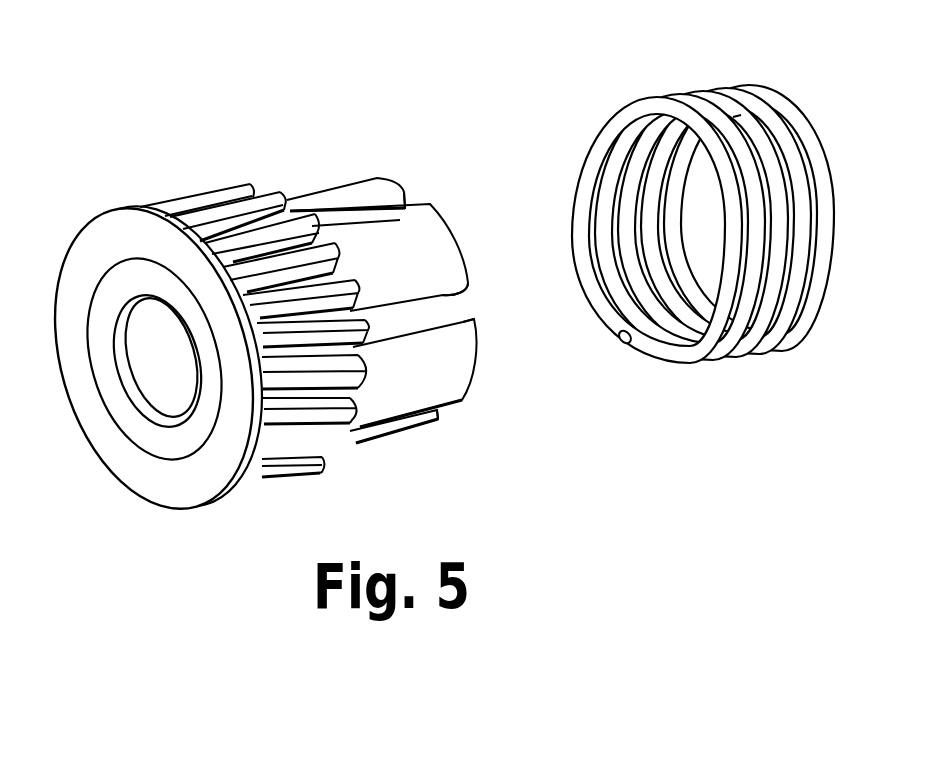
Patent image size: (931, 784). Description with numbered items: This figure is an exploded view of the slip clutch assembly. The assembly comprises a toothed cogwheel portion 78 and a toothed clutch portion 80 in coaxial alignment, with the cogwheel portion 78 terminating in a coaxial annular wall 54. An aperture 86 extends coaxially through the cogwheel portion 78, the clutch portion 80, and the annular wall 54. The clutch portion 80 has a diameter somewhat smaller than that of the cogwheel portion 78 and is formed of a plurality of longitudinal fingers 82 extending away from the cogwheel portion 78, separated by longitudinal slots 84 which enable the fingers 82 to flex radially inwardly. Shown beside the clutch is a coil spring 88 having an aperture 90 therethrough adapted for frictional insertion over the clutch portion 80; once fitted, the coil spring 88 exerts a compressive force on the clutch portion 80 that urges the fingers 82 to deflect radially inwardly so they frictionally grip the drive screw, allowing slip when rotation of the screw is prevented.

The annular wall 54 is at (168, 435).
The cogwheel portion 78 is at (197, 193).
The clutch portion 80 is at (303, 182).
The longitudinal fingers 82 is at (342, 180).
The longitudinal slots 84 is at (375, 207).
The aperture 86 is at (180, 346).
The coil spring 88 is at (787, 123).
The aperture 90 is at (705, 211).